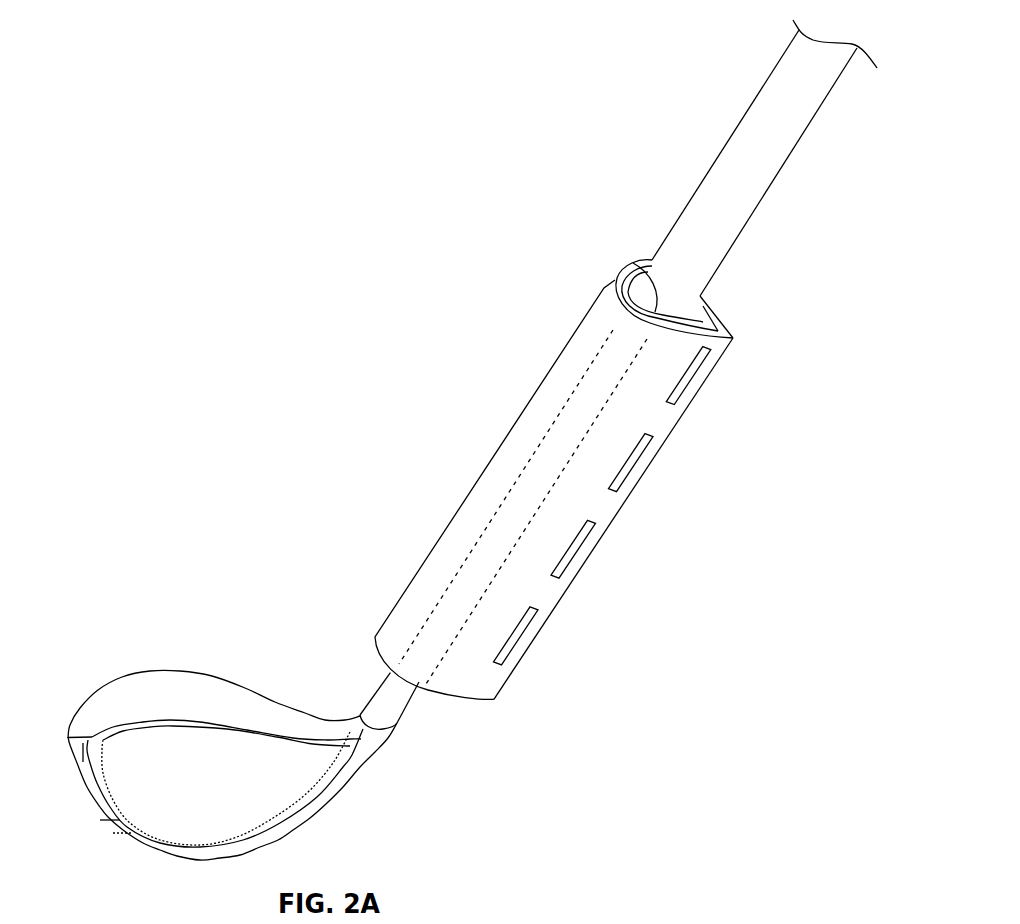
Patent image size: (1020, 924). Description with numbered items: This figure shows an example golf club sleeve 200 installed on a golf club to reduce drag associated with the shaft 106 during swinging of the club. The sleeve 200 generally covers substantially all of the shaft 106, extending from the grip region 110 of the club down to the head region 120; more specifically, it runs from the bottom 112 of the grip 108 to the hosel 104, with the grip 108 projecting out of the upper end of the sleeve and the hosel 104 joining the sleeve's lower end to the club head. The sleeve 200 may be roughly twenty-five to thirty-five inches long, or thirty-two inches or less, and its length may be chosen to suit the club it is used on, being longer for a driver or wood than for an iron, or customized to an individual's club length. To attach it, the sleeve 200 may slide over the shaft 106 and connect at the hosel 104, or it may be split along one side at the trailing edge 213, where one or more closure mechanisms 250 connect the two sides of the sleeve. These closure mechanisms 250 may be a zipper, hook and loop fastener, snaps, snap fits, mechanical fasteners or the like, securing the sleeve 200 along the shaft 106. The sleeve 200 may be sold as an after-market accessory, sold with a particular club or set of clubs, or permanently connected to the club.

The grip region 110 is at (492, 86).
The grip 108 is at (793, 130).
The bottom of the grip 112 is at (632, 251).
The shaft 106 is at (572, 425).
The golf club sleeve 200 is at (597, 512).
The trailing edge 213 is at (677, 423).
The closure mechanisms 250 is at (695, 378).
The hosel 104 is at (382, 694).
The head region 120 is at (173, 657).